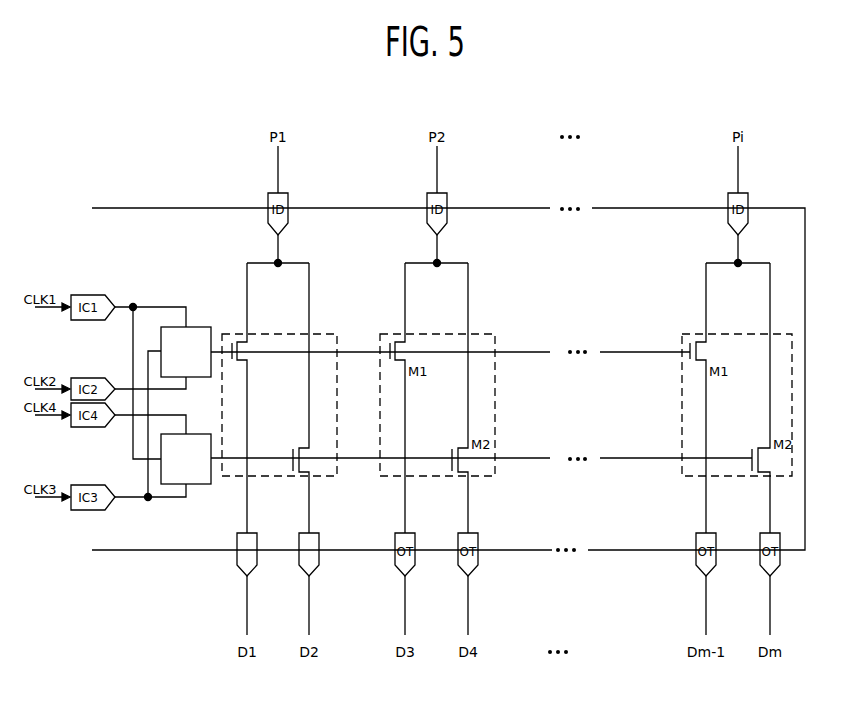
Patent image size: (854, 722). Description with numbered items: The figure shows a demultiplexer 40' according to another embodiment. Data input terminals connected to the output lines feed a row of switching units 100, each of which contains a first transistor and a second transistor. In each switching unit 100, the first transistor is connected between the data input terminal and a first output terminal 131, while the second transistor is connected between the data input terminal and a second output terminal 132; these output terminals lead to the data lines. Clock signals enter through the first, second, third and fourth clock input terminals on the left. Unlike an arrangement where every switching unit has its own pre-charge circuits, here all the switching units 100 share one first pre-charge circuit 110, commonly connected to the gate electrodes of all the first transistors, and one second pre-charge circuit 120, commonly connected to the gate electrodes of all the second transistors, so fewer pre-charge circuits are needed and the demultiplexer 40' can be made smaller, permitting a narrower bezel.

The demultiplexer 40' is at (448, 351).
The switching unit 100 is at (270, 333).
The first pre-charge circuit 110 is at (172, 327).
The second pre-charge circuit 120 is at (172, 484).
The first output terminal 131 is at (243, 572).
The second output terminal 132 is at (314, 572).